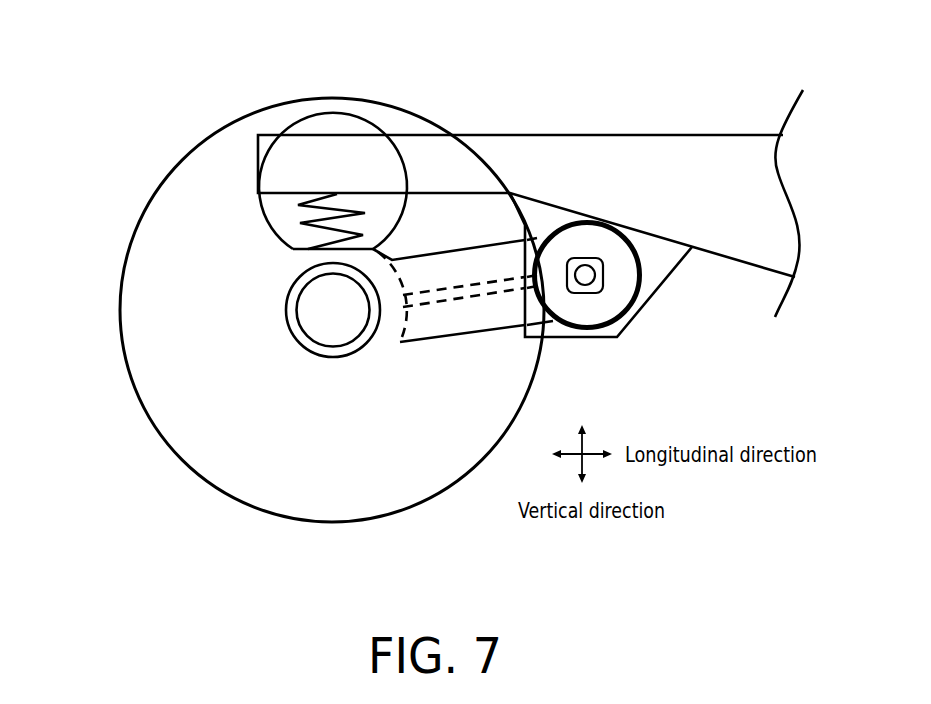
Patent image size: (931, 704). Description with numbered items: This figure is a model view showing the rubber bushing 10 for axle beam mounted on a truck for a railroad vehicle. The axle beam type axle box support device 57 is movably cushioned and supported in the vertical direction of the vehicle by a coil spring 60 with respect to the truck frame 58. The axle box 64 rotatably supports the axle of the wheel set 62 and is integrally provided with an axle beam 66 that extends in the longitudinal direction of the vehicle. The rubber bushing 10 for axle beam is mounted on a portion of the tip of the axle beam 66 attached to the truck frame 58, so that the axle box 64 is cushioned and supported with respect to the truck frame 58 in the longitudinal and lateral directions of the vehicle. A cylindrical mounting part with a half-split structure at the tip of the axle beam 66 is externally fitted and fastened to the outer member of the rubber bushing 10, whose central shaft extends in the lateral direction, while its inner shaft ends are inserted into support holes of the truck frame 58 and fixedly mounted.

The rubber bushing for axle beam 10 is at (617, 292).
The axle beam type axle box support device 57 is at (214, 274).
The truck frame 58 is at (640, 150).
The coil spring 60 is at (300, 227).
The wheel set 62 is at (153, 312).
The axle box 64 is at (270, 360).
The axle beam 66 is at (457, 265).